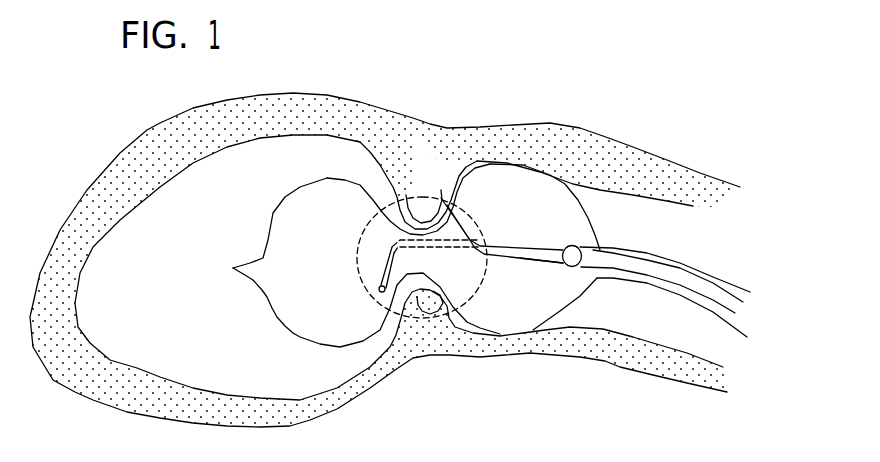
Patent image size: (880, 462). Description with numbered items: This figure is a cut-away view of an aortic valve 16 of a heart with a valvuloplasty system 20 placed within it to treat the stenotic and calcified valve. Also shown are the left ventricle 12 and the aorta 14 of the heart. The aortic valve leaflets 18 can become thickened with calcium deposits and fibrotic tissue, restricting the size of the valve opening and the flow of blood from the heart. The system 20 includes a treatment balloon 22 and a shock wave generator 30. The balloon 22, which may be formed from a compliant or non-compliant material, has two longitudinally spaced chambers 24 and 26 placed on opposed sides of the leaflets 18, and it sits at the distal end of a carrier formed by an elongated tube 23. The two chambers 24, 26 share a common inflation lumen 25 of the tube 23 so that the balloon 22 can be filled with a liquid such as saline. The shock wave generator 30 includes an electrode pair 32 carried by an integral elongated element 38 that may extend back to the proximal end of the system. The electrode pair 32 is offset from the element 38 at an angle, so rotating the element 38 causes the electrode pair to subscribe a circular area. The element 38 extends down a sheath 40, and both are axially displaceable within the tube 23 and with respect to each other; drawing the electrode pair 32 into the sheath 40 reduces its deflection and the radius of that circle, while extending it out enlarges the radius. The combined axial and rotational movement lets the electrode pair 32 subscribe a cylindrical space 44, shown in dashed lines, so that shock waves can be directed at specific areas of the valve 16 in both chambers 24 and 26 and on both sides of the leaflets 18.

The left ventricle 12 is at (159, 290).
The aorta 14 is at (583, 200).
The aortic valve 16 is at (364, 174).
The aortic valve leaflets 18 is at (407, 195).
The valvuloplasty system 20 is at (570, 152).
The treatment balloon 22 is at (262, 208).
The elongated tube 23 is at (716, 276).
The balloon chamber 24 is at (522, 318).
The common inflation lumen 25 is at (661, 252).
The balloon chamber 26 is at (295, 327).
The shock wave generator 30 is at (490, 197).
The electrode pair 32 is at (451, 197).
The elongated element 38 is at (533, 261).
The sheath 40 is at (594, 250).
The cylindrical space 44 is at (380, 235).